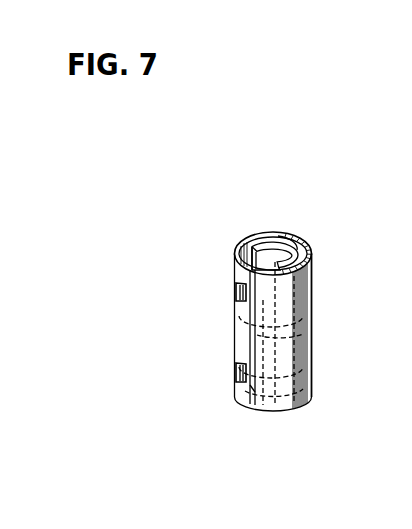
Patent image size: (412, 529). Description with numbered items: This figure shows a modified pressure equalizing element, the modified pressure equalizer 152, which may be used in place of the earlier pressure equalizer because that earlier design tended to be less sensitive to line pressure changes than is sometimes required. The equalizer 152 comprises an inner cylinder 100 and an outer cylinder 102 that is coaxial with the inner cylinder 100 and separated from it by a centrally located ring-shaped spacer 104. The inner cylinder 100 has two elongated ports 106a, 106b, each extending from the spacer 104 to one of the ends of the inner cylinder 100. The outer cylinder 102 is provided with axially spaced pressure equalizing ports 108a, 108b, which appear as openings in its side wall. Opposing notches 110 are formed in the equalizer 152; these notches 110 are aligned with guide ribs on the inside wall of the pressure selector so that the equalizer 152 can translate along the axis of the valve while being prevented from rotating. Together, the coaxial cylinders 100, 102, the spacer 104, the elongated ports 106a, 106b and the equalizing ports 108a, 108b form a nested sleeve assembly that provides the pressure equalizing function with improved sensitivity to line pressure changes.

The inner cylinder 100 is at (264, 242).
The outer cylinder 102 is at (309, 245).
The ring-shaped spacer 104 is at (292, 345).
The elongated port 106a is at (303, 292).
The elongated port 106b is at (290, 385).
The pressure equalizing port 108a is at (236, 290).
The pressure equalizing port 108b is at (236, 372).
The opposing notches 110 is at (293, 240).
The modified pressure equalizer 152 is at (244, 263).